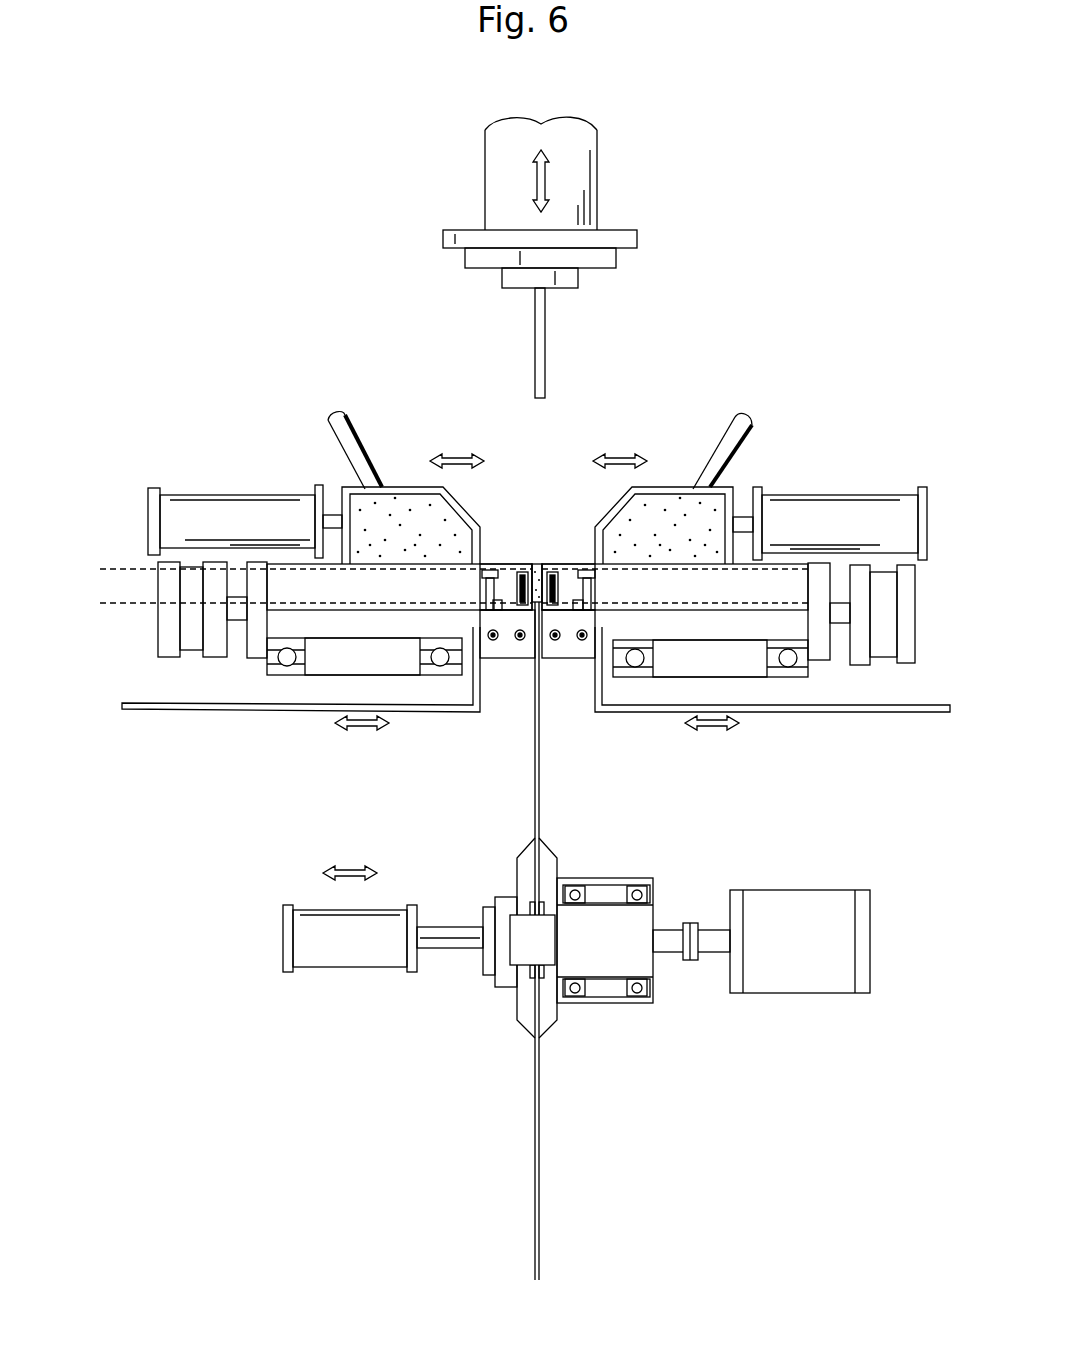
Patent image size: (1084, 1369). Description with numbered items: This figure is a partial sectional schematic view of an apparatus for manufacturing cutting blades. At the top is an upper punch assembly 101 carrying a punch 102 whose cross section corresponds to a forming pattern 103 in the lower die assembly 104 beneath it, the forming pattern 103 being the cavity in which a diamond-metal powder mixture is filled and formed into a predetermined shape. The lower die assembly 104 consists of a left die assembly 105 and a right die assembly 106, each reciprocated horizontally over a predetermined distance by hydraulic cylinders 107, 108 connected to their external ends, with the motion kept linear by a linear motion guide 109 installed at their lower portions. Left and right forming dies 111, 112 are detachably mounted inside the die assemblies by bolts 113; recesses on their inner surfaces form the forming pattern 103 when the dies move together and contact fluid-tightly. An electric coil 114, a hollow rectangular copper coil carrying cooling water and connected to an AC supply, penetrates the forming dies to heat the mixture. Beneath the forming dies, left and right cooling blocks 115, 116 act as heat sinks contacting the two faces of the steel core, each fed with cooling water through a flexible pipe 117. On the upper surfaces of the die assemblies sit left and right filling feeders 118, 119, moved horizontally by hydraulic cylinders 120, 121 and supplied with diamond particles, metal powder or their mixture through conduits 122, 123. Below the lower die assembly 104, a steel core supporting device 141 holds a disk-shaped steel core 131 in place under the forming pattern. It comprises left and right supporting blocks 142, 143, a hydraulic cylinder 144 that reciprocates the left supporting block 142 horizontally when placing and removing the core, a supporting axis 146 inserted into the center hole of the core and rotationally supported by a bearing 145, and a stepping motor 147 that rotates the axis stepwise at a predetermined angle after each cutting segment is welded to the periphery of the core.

The upper punch assembly 101 is at (615, 202).
The punch 102 is at (540, 343).
The forming pattern 103 is at (537, 564).
The lower die assembly 104 is at (190, 783).
The left die assembly 105 is at (340, 630).
The right die assembly 106 is at (740, 634).
The hydraulic cylinder 107 is at (168, 657).
The hydraulic cylinder 108 is at (905, 664).
The linear motion guide 109 is at (400, 666).
The left forming die 111 is at (512, 568).
The right forming die 112 is at (563, 568).
The bolt 113 is at (489, 570).
The electric coil 114 is at (115, 567).
The left cooling block 115 is at (507, 658).
The right cooling block 116 is at (549, 652).
The flexible pipe 117 is at (455, 711).
The left filling feeder 118 is at (405, 489).
The right filling feeder 119 is at (670, 490).
The hydraulic cylinder 120 is at (198, 497).
The hydraulic cylinder 121 is at (883, 505).
The conduit 122 is at (350, 420).
The conduit 123 is at (722, 428).
The disk-shaped steel core 131 is at (545, 792).
The steel core supporting device 141 is at (324, 1139).
The left supporting block 142 is at (523, 1015).
The right supporting block 143 is at (548, 1022).
The hydraulic cylinder 144 is at (326, 960).
The bearing 145 is at (598, 975).
The supporting axis 146 is at (522, 957).
The stepping motor 147 is at (818, 987).